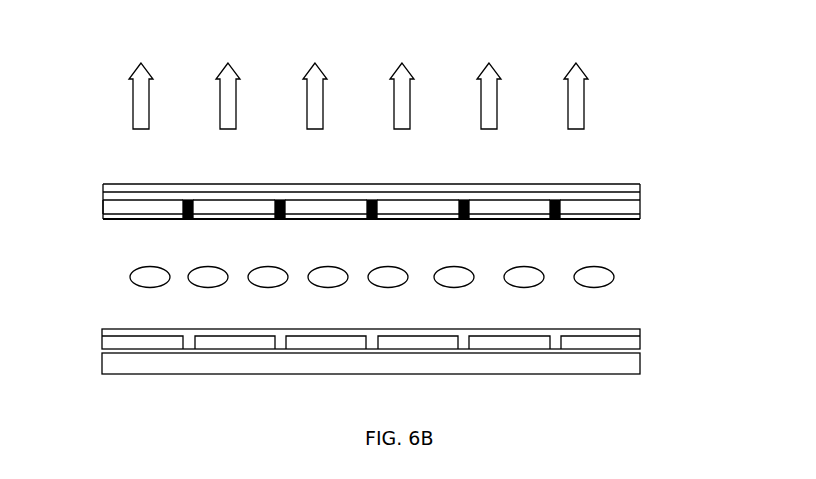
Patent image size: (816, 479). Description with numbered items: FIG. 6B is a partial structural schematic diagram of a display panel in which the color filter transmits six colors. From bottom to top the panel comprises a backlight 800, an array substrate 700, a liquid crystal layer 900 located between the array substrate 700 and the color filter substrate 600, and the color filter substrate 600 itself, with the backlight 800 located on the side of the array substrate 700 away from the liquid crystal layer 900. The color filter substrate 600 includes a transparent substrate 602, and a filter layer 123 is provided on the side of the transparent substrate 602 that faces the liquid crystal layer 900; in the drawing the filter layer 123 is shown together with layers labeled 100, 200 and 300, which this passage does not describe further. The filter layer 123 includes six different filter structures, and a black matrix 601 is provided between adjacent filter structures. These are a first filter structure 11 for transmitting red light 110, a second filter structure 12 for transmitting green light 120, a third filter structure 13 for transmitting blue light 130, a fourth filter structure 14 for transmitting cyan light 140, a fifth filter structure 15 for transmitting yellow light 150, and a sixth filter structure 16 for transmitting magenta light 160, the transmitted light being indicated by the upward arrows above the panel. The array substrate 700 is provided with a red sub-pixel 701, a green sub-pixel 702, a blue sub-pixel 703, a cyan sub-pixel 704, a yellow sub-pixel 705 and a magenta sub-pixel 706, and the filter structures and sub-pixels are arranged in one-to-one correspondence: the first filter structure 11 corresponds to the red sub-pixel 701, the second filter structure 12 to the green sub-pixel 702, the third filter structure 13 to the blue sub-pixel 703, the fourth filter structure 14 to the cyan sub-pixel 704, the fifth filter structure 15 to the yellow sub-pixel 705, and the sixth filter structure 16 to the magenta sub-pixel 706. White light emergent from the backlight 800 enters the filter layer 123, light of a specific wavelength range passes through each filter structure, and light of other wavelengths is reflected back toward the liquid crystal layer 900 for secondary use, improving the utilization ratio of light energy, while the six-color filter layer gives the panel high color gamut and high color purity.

The red light 110 is at (110, 96).
The green light 120 is at (194, 85).
The blue light 130 is at (289, 85).
The cyan light 140 is at (373, 88).
The yellow light 150 is at (458, 82).
The magenta light 160 is at (609, 96).
The color filter substrate 600 is at (713, 142).
The black matrix 601 is at (116, 171).
The transparent substrate 602 is at (405, 163).
The upper layer 200 is at (405, 191).
The middle layer 300 is at (405, 216).
The bottom layer 100 is at (405, 234).
The filter layer 123 is at (80, 213).
The first filter structure 11 is at (116, 181).
The second filter structure 12 is at (213, 178).
The third filter structure 13 is at (310, 178).
The fourth filter structure 14 is at (405, 178).
The fifth filter structure 15 is at (492, 178).
The sixth filter structure 16 is at (578, 178).
The liquid crystal layer 900 is at (419, 282).
The array substrate 700 is at (405, 331).
The red sub-pixel 701 is at (109, 342).
The green sub-pixel 702 is at (213, 372).
The blue sub-pixel 703 is at (306, 372).
The cyan sub-pixel 704 is at (404, 372).
The yellow sub-pixel 705 is at (495, 372).
The magenta sub-pixel 706 is at (585, 372).
The backlight 800 is at (627, 363).